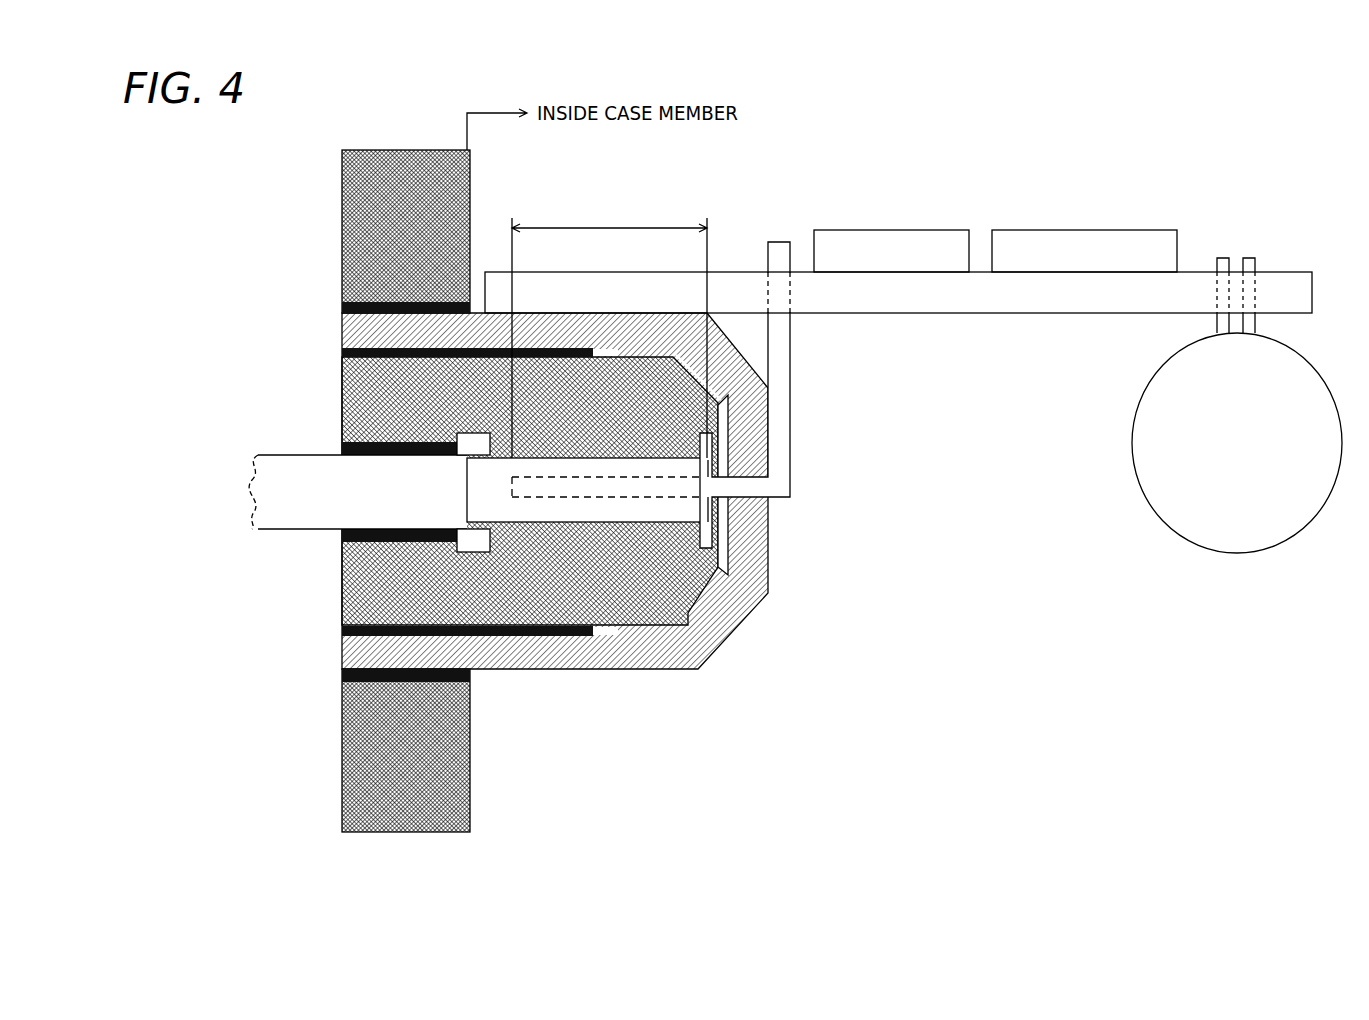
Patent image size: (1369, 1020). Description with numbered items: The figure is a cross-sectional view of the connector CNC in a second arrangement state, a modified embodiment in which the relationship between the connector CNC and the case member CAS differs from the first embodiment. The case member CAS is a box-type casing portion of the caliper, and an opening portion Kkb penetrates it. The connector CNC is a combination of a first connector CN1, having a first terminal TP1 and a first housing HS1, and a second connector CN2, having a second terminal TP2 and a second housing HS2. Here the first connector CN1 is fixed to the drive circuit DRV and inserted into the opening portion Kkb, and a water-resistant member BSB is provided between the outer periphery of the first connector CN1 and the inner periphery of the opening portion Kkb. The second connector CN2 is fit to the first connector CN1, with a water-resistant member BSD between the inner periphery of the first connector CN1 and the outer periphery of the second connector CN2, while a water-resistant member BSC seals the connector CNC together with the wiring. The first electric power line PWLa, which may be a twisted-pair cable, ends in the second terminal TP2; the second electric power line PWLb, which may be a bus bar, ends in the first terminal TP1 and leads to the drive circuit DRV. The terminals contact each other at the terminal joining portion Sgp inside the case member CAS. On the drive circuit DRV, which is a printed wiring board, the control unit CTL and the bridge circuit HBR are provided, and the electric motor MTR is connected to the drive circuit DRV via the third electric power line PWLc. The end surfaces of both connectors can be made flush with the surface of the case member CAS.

The case member CAS is at (342, 206).
The water-resistant member BSB is at (342, 312).
The water-resistant member BSC is at (342, 532).
The water-resistant member BSD is at (342, 632).
The first electric power line PWLa is at (262, 455).
The second electric power line PWLb is at (791, 364).
The third electric power line PWLc is at (1213, 257).
The opening portion Kkb is at (259, 651).
The first housing HS1 is at (640, 669).
The second housing HS2 is at (508, 617).
The first terminal TP1 is at (685, 492).
The second terminal TP2 is at (578, 522).
The first connector CN1 is at (630, 755).
The second connector CN2 is at (485, 755).
The connector CNC is at (515, 803).
The drive circuit DRV is at (739, 272).
The control unit CTL is at (891, 251).
The bridge circuit HBR is at (1084, 251).
The electric motor MTR is at (1237, 443).
The terminal joining portion Sgp is at (609, 301).